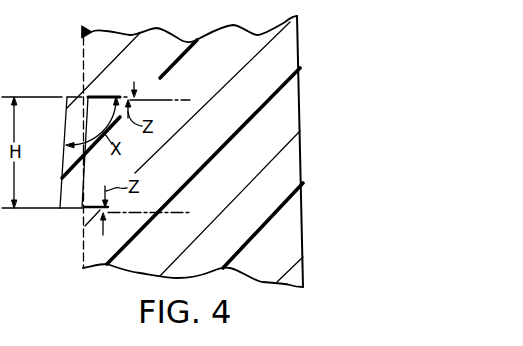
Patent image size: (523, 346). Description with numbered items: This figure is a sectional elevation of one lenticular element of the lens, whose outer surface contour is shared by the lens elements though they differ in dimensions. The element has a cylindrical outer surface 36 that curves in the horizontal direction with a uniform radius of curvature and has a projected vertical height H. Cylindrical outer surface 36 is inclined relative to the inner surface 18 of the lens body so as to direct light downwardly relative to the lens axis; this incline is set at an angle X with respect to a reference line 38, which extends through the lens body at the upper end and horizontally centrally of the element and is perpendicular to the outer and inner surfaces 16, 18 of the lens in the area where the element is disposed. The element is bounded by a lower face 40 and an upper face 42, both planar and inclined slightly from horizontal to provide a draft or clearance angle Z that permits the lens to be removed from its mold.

The outer surface 16 is at (305, 258).
The inner surface 18 is at (83, 255).
The cylindrical outer surface 36 is at (65, 131).
The reference line 38 is at (144, 97).
The lower face 40 is at (70, 214).
The upper face 42 is at (78, 96).